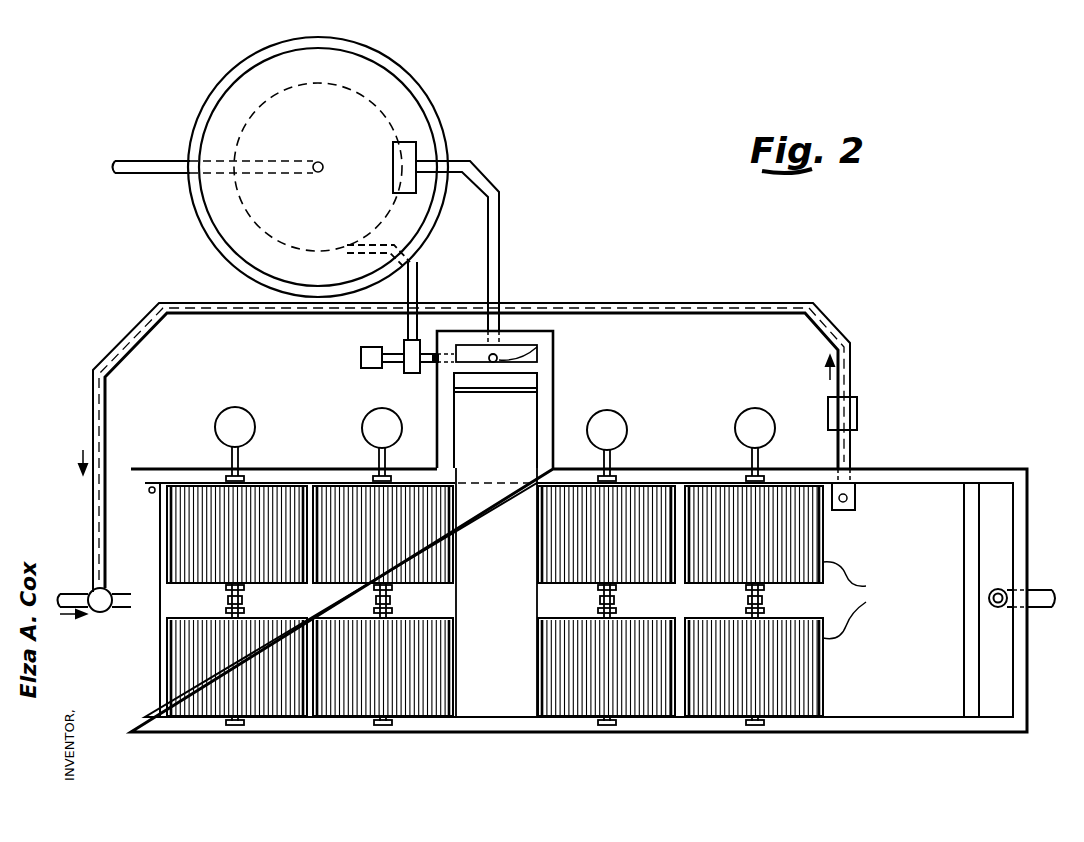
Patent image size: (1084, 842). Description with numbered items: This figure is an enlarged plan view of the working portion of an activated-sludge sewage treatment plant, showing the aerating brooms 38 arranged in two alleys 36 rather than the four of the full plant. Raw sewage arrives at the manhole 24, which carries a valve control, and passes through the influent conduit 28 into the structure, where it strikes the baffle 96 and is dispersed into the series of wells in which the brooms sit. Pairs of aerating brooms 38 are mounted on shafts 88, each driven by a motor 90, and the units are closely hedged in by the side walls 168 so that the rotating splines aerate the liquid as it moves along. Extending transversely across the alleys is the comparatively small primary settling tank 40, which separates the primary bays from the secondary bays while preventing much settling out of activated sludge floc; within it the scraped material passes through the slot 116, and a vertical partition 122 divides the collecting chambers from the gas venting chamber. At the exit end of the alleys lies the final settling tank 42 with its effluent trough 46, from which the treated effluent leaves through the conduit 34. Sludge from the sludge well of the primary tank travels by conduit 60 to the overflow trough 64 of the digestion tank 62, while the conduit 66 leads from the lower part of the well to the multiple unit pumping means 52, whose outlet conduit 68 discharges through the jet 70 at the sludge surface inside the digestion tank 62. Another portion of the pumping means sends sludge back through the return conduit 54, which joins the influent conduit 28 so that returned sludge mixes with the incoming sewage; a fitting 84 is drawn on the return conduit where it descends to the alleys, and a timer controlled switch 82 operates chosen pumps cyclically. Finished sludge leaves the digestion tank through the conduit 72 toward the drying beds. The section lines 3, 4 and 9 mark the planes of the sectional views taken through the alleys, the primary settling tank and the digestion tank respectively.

The section line 3- 3 is at (123, 670).
The section line 4- 4 is at (527, 300).
The section line 9- 9 is at (318, 32).
The manhole 24 is at (92, 590).
The influent conduit 28 is at (121, 609).
The incoming conduit 34 is at (1044, 595).
The alley 36 is at (857, 600).
The aerating rotating broom 38 is at (271, 572).
The primary settling tank 40 is at (508, 583).
The final settling tank 42 is at (918, 669).
The effluent trough 46 is at (984, 600).
The multiple unit pumping means 52 is at (408, 368).
The return conduit 54 is at (128, 340).
The conduit 60 is at (480, 178).
The digestion tank 62 is at (308, 213).
The overflow trough 64 is at (397, 170).
The conduit 66 is at (430, 367).
The conduit 68 is at (418, 300).
The jet 70 is at (347, 246).
The conduit 72 is at (149, 160).
The timer controlled switch 82 is at (361, 357).
The valve 84 is at (846, 406).
The shaft 88 is at (230, 458).
The motor 90 is at (223, 411).
The baffle 96 is at (146, 480).
The slot 116 is at (520, 389).
The vertical partition 122 is at (539, 348).
The side wall 168 is at (284, 470).